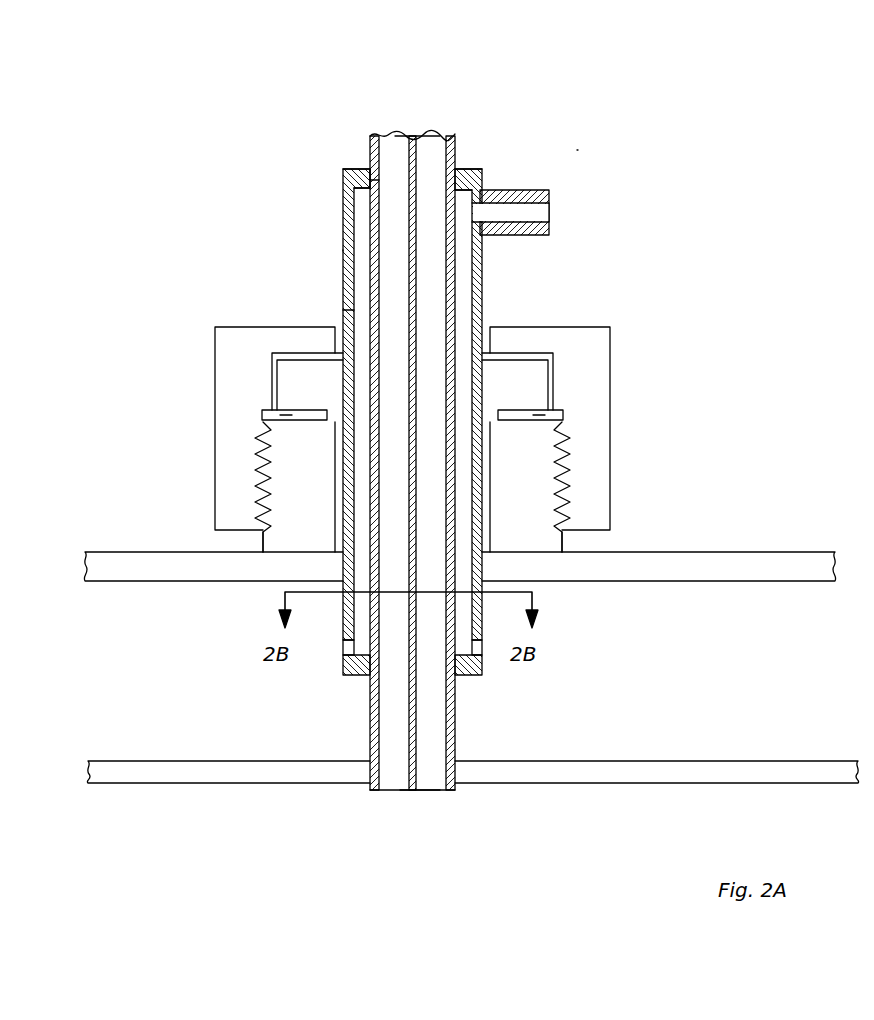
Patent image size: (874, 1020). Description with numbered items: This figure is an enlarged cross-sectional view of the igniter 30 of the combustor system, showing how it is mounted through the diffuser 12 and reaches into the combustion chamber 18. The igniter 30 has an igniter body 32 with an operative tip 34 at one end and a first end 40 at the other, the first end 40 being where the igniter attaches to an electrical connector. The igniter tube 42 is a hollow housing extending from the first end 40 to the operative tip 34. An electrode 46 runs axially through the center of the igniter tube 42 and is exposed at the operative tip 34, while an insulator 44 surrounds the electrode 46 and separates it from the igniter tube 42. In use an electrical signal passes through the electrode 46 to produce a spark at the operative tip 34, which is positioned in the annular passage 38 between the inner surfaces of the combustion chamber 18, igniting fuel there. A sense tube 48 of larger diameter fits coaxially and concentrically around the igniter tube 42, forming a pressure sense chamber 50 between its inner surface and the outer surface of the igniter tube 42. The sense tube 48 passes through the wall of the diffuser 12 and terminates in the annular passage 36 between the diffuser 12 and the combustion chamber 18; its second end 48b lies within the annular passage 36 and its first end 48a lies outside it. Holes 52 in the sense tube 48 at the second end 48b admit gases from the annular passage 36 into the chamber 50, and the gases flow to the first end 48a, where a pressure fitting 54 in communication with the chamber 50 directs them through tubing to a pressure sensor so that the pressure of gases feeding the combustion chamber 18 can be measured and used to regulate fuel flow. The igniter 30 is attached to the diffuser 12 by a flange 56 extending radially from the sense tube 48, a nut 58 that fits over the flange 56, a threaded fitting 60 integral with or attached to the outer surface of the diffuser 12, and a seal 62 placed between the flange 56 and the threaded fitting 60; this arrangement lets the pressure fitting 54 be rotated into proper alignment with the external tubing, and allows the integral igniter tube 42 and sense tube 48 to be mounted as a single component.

The diffuser 12 is at (120, 550).
The combustion chamber 18 is at (125, 759).
The igniter 30 is at (578, 150).
The igniter body 32 is at (325, 250).
The operative tip 34 is at (427, 793).
The annular passage 36 is at (219, 664).
The annular passage 38 is at (226, 839).
The first end 40 is at (428, 132).
The igniter tube 42 is at (450, 288).
The insulator 44 is at (427, 313).
The electrode 46 is at (380, 180).
The sense tube 48 is at (343, 310).
The first end 48a is at (464, 168).
The second end 48b is at (467, 678).
The pressure sense chamber 50 is at (365, 220).
The holes 52 is at (343, 648).
The pressure fitting 54 is at (540, 197).
The flange 56 is at (292, 378).
The nut 58 is at (238, 466).
The threaded fitting 60 is at (283, 540).
The seal 62 is at (262, 417).